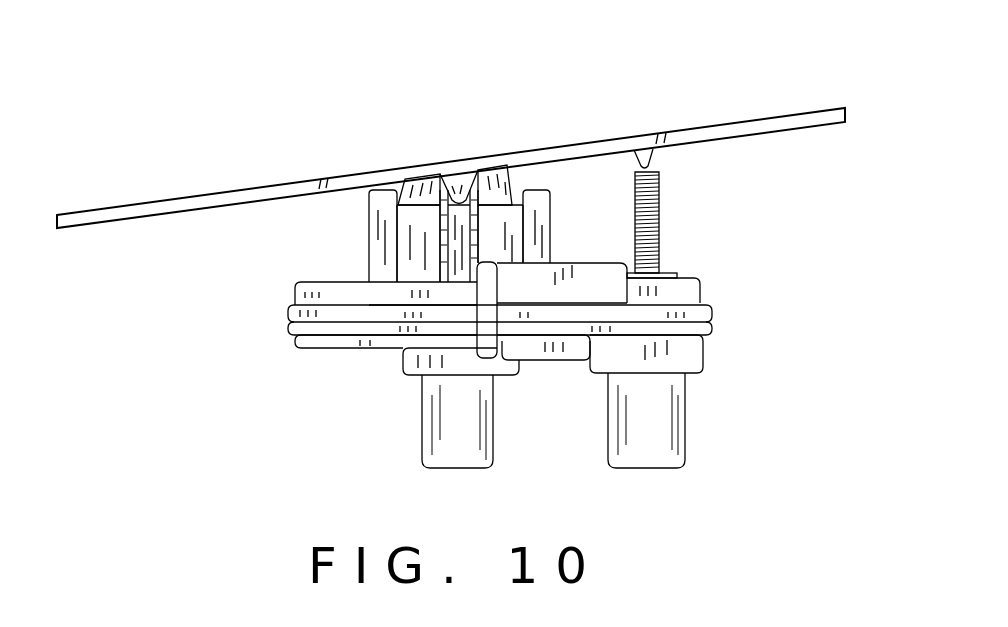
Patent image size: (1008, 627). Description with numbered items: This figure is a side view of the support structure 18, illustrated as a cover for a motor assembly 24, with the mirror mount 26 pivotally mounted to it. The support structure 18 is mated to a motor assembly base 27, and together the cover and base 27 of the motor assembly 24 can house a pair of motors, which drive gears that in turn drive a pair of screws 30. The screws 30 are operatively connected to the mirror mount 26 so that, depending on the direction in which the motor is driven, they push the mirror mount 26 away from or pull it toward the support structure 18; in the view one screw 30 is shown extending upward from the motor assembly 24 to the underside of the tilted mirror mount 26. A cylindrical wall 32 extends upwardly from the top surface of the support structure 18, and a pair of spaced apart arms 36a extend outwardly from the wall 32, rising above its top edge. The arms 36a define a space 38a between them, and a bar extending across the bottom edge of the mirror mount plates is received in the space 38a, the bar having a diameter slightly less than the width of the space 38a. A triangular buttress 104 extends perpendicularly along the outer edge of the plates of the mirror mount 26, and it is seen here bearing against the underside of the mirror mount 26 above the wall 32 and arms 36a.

The mirror mount 26 is at (827, 108).
The screws 30 is at (660, 219).
The triangular buttress 104 is at (460, 182).
The cylindrical wall 32 is at (418, 230).
The arms 36a is at (480, 244).
The space 38a is at (458, 280).
The support structure 18 is at (262, 327).
The motor assembly 24 is at (727, 325).
The motor assembly base 27 is at (688, 427).